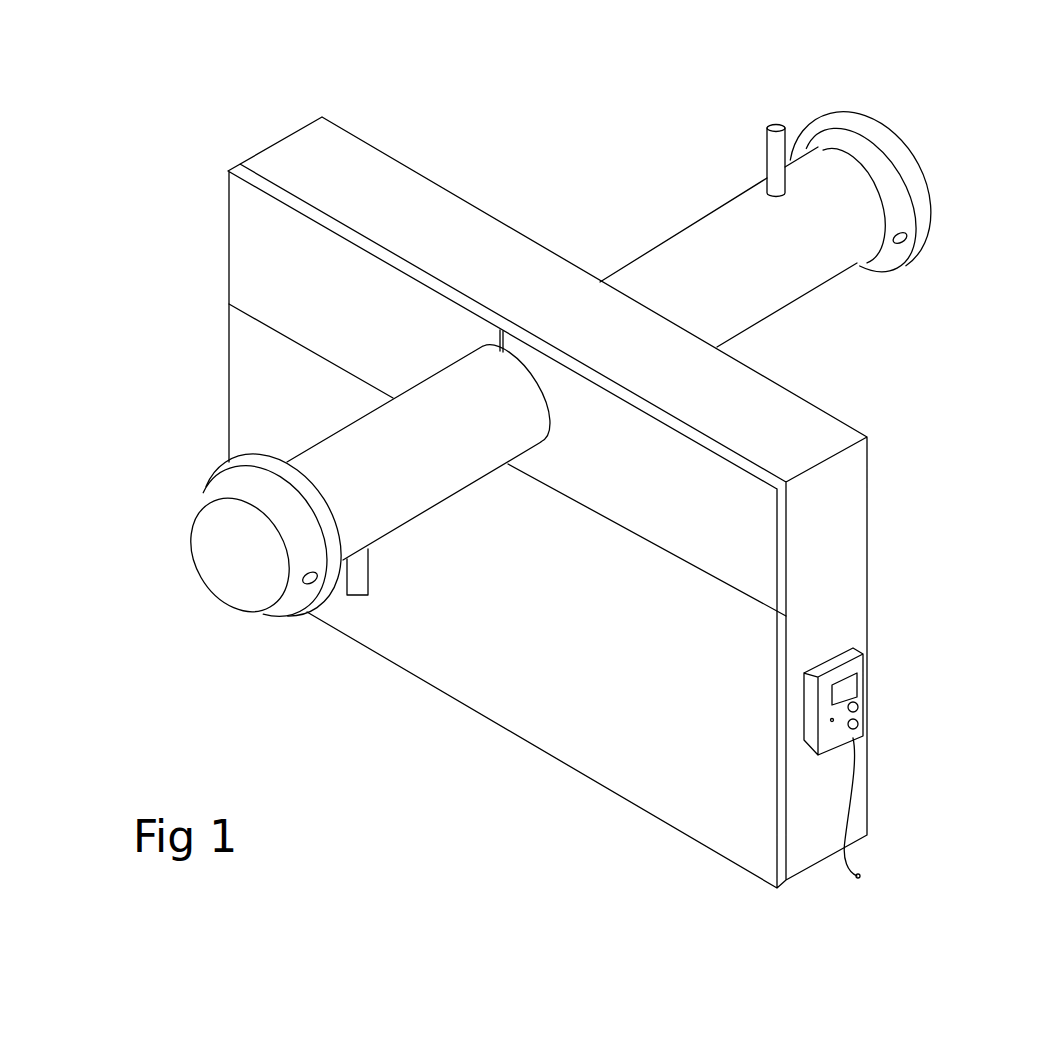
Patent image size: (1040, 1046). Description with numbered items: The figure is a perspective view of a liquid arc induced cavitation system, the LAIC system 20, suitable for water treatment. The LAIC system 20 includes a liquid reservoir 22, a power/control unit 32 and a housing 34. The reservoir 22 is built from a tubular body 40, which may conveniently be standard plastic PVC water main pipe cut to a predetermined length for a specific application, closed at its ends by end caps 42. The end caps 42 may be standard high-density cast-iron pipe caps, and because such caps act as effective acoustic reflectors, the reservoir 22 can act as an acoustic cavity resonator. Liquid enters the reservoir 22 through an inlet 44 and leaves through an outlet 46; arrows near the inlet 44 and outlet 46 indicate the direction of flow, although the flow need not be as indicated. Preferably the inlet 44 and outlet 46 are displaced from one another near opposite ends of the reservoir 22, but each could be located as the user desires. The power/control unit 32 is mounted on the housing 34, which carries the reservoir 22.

The LAIC system 20 is at (569, 115).
The liquid reservoir 22 is at (793, 257).
The power/control unit 32 is at (866, 687).
The housing 34 is at (603, 722).
The tubular body 40 is at (697, 250).
The end caps 42 is at (231, 566).
The inlet 44 is at (361, 578).
The outlet 46 is at (784, 60).